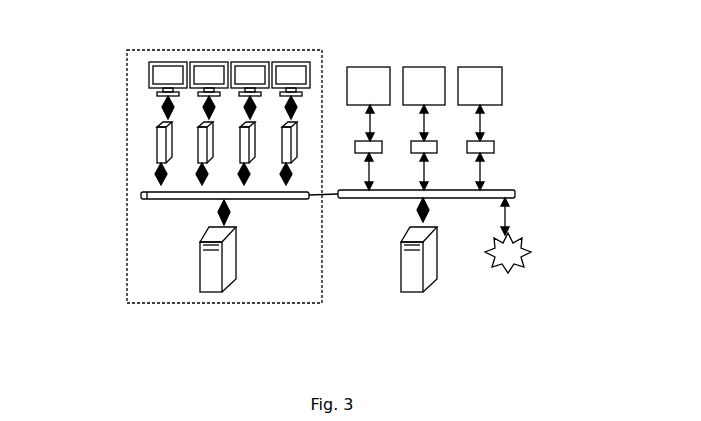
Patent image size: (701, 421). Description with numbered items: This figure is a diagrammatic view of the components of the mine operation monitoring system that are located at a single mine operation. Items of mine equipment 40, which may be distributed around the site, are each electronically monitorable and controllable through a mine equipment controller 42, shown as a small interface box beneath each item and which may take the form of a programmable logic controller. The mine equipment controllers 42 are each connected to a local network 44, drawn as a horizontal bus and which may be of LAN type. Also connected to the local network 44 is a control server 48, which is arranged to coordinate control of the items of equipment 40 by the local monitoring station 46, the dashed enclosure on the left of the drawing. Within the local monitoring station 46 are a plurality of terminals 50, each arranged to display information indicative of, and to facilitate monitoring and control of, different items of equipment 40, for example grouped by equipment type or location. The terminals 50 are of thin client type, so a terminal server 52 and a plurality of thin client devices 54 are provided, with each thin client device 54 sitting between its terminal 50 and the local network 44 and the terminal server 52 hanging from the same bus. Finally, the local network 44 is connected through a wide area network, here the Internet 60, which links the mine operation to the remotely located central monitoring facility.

The equipment 40 is at (385, 67).
The mine equipment controller 42 is at (428, 145).
The local network 44 is at (152, 200).
The local monitoring station 46 is at (125, 75).
The control server 48 is at (412, 285).
The terminal 50 is at (283, 63).
The terminal server 52 is at (210, 285).
The thin client device 54 is at (197, 160).
The Internet 60 is at (532, 250).